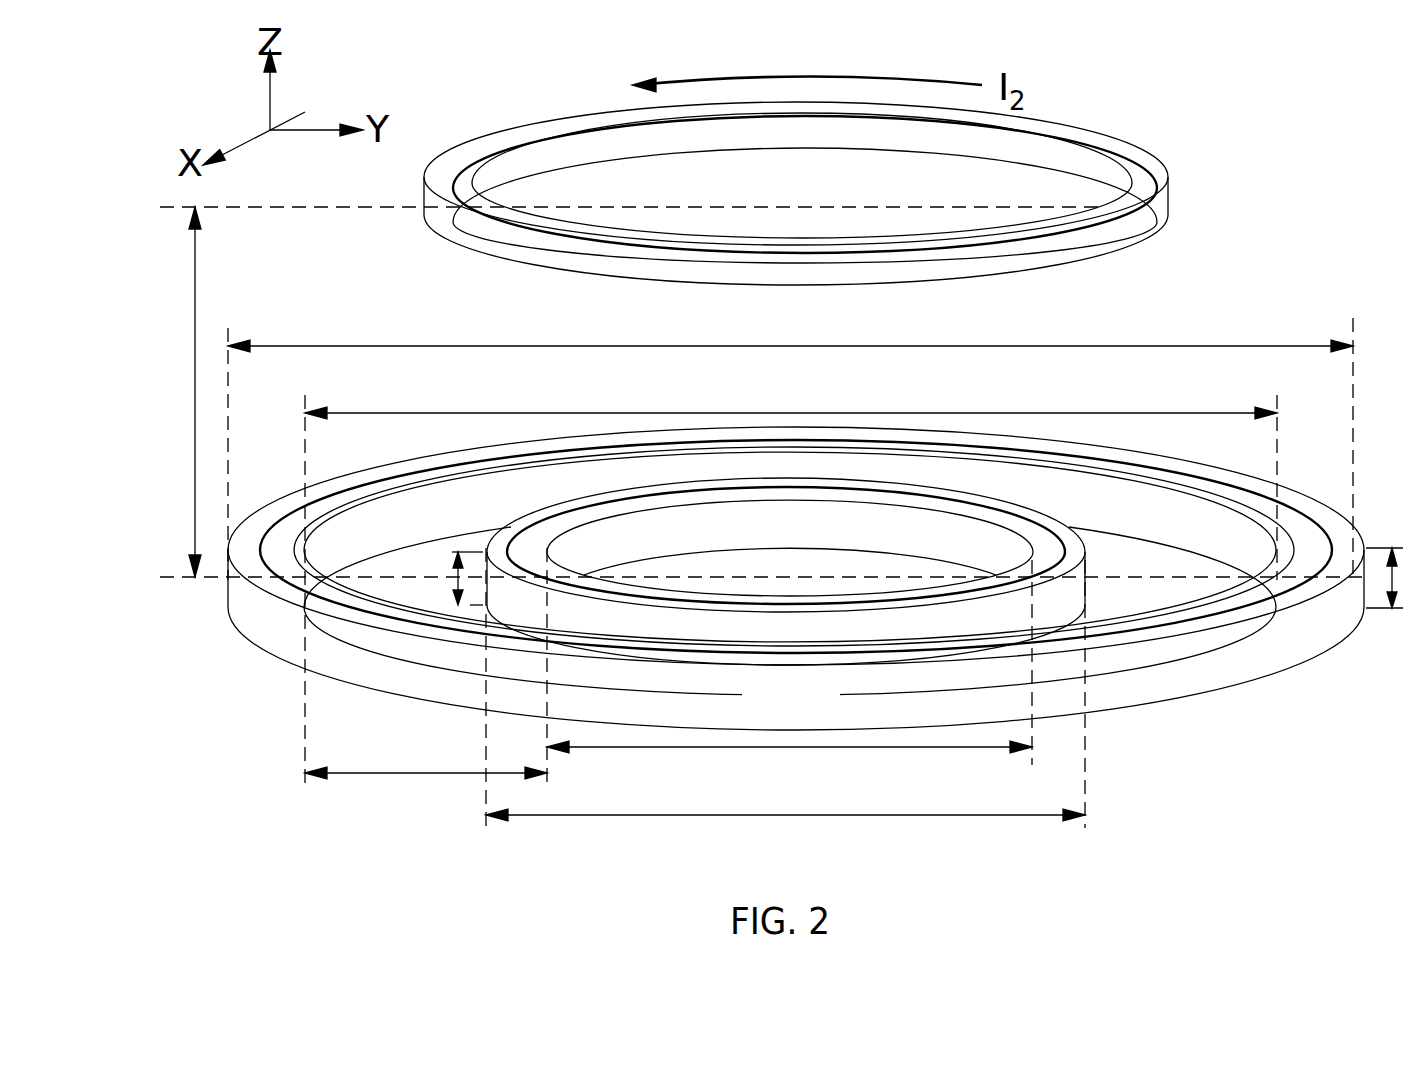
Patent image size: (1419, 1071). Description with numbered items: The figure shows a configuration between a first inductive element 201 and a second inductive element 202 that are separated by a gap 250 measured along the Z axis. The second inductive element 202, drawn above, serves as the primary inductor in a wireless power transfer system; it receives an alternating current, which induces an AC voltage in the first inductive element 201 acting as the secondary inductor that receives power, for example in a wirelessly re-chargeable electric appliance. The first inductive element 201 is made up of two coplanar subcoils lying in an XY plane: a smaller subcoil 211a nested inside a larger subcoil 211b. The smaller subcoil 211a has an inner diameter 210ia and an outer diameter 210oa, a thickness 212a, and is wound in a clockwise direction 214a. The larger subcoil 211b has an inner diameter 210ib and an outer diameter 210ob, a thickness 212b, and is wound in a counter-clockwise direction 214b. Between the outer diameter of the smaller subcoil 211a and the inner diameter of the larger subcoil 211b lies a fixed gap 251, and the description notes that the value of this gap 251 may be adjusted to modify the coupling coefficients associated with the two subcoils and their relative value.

The first inductive element 201 is at (798, 523).
The second inductive element 202 is at (1100, 135).
The outer diameter 210ob is at (995, 345).
The inner diameter 210ib is at (828, 410).
The outer diameter 210oa is at (660, 817).
The inner diameter 210ia is at (897, 750).
The smaller subcoil 211a is at (828, 546).
The larger subcoil 211b is at (838, 716).
The thickness 212a is at (452, 587).
The thickness 212b is at (1396, 585).
The clockwise direction 214a is at (1093, 612).
The counter-clockwise direction 214b is at (1362, 652).
The gap G 250 is at (193, 442).
The fixed gap G2 251 is at (355, 777).